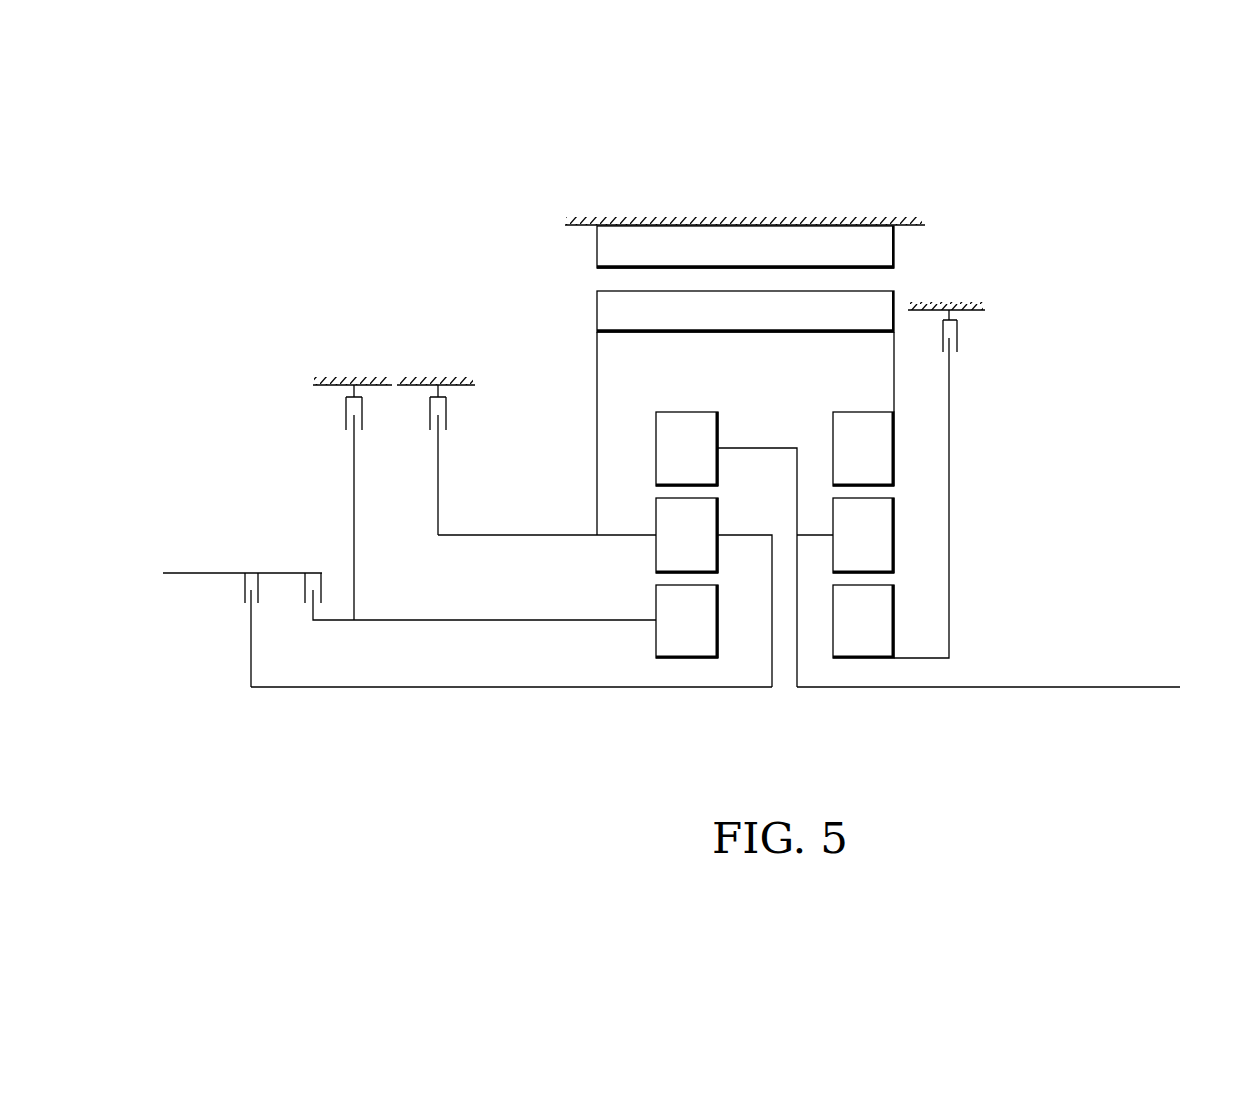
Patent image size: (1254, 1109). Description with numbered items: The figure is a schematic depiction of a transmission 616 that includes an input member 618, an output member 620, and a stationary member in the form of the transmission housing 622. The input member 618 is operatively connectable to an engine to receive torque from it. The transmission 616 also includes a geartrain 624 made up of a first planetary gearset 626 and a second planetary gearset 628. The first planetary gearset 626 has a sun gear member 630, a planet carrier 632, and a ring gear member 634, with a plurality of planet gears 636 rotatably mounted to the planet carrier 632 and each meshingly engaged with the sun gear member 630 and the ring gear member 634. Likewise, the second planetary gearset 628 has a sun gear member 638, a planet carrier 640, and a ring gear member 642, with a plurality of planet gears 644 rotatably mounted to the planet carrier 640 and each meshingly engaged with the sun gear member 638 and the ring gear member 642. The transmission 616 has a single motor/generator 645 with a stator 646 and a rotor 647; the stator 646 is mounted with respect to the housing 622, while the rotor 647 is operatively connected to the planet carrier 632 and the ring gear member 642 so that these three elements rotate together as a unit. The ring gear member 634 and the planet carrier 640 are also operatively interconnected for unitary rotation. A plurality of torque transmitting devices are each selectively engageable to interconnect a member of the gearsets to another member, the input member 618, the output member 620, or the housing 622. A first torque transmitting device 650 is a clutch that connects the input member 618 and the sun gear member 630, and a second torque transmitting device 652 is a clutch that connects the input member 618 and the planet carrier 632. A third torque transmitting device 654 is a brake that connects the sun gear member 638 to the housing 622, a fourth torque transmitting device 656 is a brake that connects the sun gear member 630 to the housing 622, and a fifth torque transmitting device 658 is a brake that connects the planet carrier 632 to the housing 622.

The transmission 616 is at (1018, 182).
The input member 618 is at (222, 573).
The output member 620 is at (1095, 687).
The transmission housing 622 is at (578, 230).
The geartrain 624 is at (730, 711).
The first planetary gearset 626 is at (690, 391).
The second planetary gearset 628 is at (855, 386).
The sun gear member 630 is at (720, 621).
The planet carrier 632 is at (628, 536).
The ring gear member 634 is at (720, 430).
The planet gears 636 is at (720, 520).
The sun gear member 638 is at (895, 622).
The planet carrier 640 is at (822, 528).
The ring gear member 642 is at (895, 448).
The planet gears 644 is at (895, 535).
The motor/generator 645 is at (588, 280).
The stator 646 is at (895, 232).
The rotor 647 is at (597, 313).
The first torque transmitting device 650 is at (298, 589).
The second torque transmitting device 652 is at (238, 589).
The third torque transmitting device 654 is at (978, 351).
The fourth torque transmitting device 656 is at (341, 418).
The fifth torque transmitting device 658 is at (457, 439).